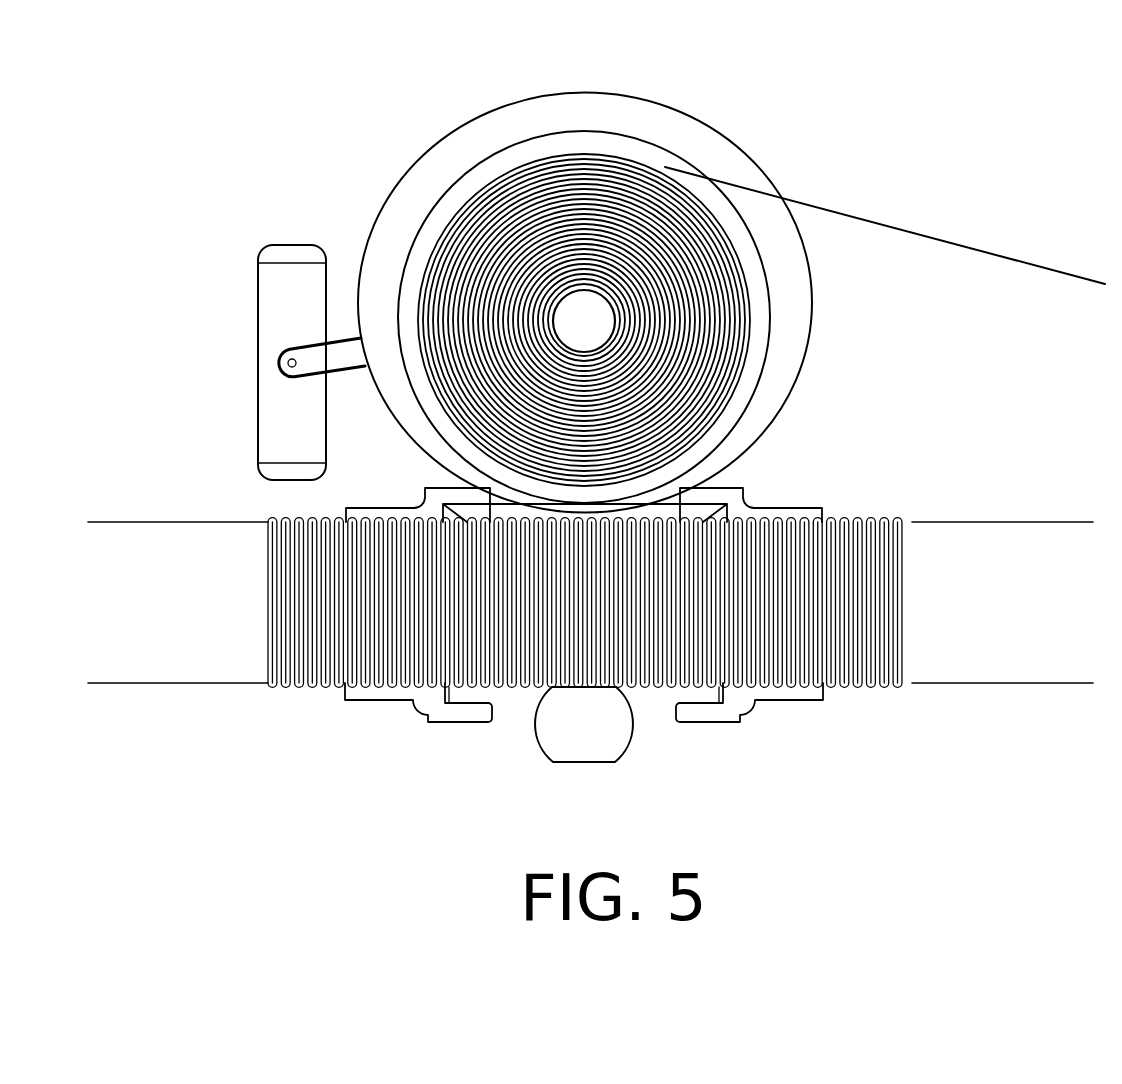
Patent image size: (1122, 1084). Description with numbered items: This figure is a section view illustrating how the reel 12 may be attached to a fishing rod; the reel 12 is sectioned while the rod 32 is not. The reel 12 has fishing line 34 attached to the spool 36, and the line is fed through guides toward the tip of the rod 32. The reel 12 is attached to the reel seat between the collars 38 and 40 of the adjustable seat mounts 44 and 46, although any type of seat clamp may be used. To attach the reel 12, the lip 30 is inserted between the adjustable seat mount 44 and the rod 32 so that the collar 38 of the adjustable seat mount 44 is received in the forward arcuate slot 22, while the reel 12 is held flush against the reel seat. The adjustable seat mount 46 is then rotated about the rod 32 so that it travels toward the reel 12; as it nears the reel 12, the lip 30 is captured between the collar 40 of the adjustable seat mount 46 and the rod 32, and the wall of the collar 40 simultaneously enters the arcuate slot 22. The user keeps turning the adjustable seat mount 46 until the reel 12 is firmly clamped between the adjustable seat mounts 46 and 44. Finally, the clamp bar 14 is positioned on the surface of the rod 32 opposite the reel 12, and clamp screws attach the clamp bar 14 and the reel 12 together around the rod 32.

The reel 12 is at (413, 205).
The clamp bar 14 is at (560, 720).
The arcuate slot 22 is at (488, 512).
The lip 30 is at (445, 506).
The rod 32 is at (940, 660).
The fishing line 34 is at (897, 225).
The spool 36 is at (586, 318).
The collar 38 is at (703, 712).
The collar 40 is at (467, 713).
The adjustable seat mount 44 is at (750, 690).
The adjustable seat mount 46 is at (363, 692).